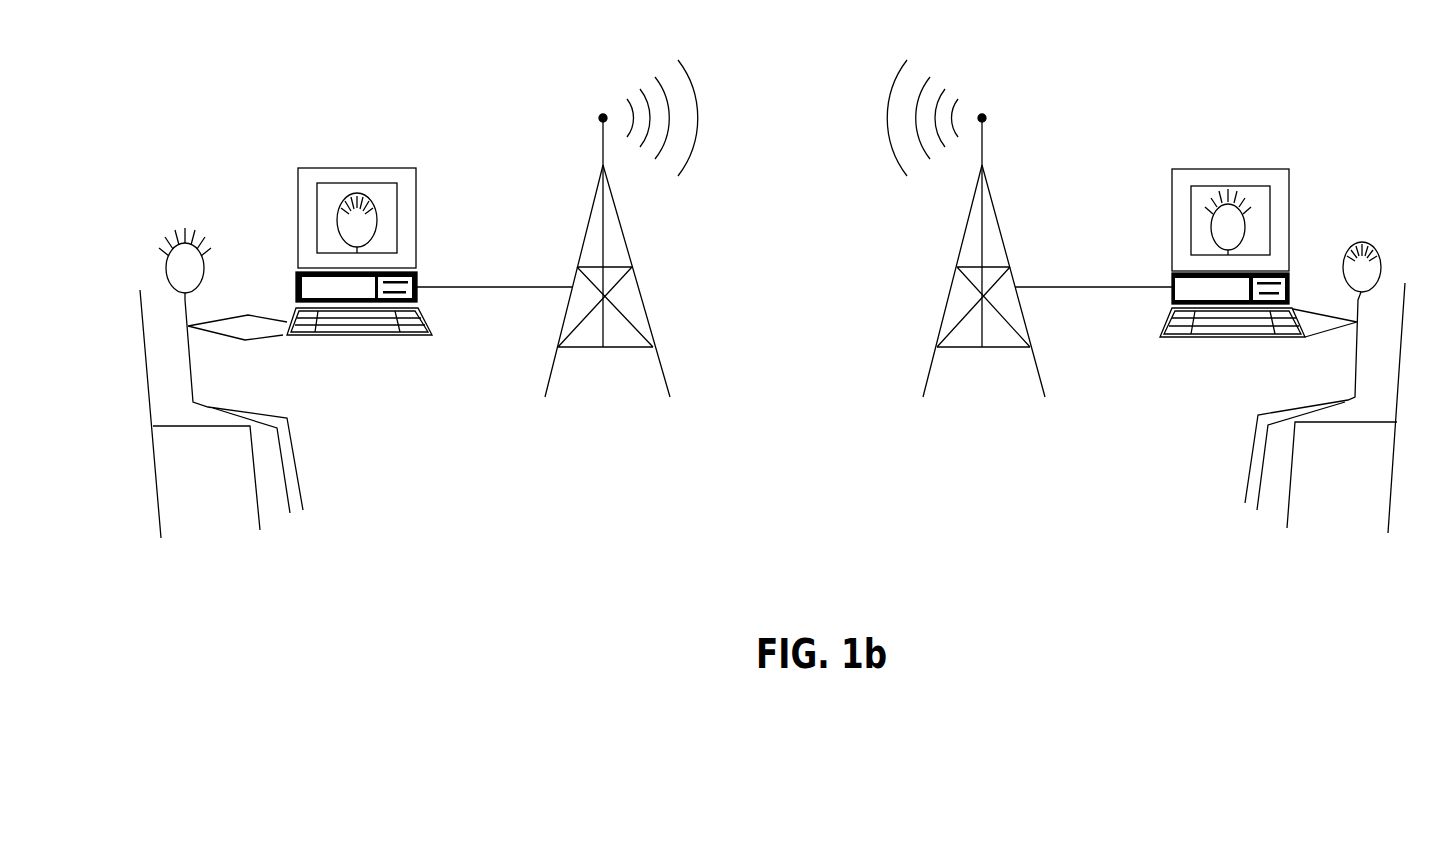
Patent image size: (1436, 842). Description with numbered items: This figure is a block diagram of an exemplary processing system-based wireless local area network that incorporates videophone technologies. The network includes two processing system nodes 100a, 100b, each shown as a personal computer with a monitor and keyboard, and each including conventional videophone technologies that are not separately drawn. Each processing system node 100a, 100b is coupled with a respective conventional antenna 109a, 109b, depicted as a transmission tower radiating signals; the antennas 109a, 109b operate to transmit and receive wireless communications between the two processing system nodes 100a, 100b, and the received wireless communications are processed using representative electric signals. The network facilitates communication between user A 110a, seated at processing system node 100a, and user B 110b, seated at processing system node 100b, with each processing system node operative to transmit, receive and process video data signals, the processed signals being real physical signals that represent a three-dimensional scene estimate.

The processing system node 100a is at (351, 168).
The user A 110a is at (184, 243).
The antenna 109a is at (638, 287).
The antenna 109b is at (952, 287).
The processing system node 100b is at (1237, 169).
The user B 110b is at (1360, 243).